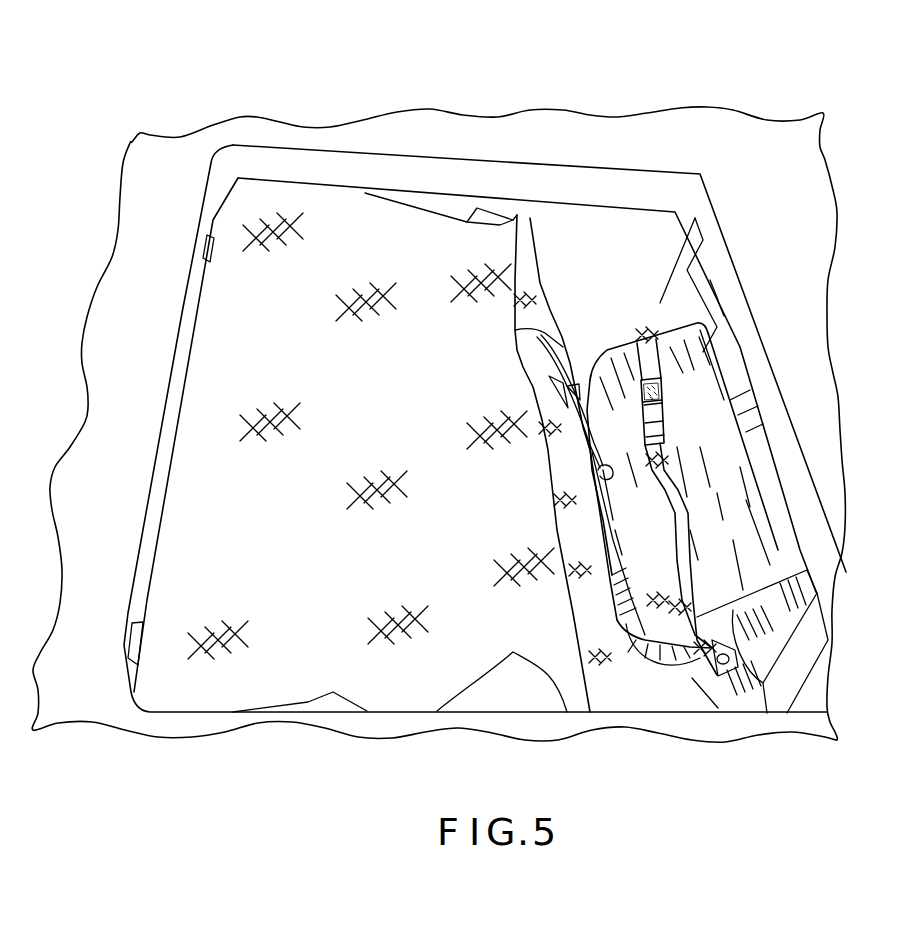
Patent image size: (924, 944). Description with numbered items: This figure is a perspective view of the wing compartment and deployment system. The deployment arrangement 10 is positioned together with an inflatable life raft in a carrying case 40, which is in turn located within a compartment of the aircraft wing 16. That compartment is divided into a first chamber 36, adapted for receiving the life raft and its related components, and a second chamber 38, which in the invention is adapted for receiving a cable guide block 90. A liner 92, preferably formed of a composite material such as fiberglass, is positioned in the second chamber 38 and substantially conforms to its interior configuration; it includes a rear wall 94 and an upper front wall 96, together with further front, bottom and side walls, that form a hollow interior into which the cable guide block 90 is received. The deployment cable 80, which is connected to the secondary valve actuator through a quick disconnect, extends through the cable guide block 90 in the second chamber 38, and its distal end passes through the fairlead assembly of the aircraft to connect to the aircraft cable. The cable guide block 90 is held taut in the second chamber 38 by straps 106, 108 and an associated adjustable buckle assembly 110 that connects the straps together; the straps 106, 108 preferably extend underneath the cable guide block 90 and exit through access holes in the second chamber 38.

The deployment arrangement 10 is at (500, 107).
The aircraft wing 16 is at (158, 165).
The first chamber 36 is at (605, 245).
The second chamber 38 is at (727, 379).
The carrying case 40 is at (283, 182).
The deployment cable 80 is at (541, 342).
The cable guide block 90 is at (727, 467).
The liner 92 is at (643, 640).
The rear wall 94 is at (598, 528).
The upper front wall 96 is at (772, 513).
The strap 106 is at (680, 595).
The strap 108 is at (643, 345).
The adjustable buckle assembly 110 is at (650, 413).